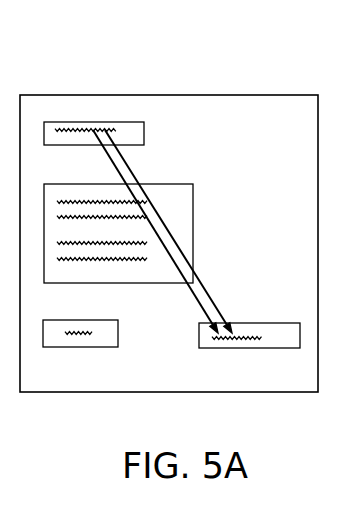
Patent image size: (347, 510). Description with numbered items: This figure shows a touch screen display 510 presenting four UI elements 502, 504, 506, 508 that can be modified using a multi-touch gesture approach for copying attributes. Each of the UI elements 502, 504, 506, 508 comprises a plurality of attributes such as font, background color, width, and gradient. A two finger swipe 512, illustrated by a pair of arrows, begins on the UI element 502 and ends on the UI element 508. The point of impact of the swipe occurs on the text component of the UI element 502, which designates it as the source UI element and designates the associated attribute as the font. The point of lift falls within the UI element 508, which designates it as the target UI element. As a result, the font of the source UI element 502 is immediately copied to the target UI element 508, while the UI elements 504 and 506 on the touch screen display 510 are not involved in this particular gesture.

The touch screen display 510 is at (207, 95).
The UI element 502 is at (144, 133).
The UI element 504 is at (193, 195).
The UI element 506 is at (110, 320).
The UI element 508 is at (277, 323).
The two finger swipe 512 is at (202, 287).